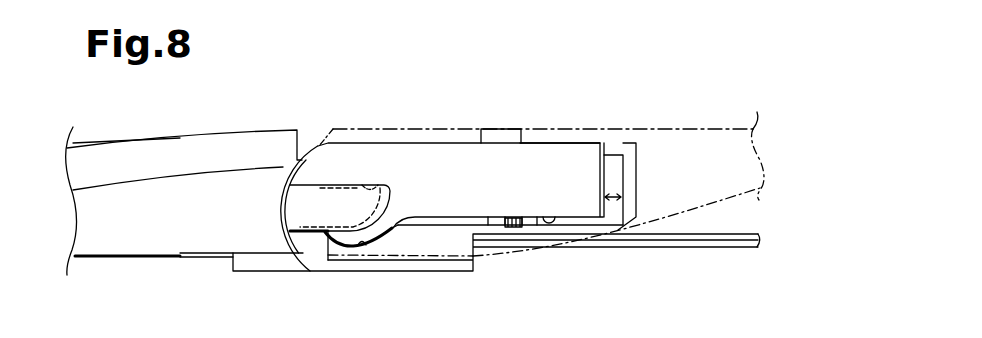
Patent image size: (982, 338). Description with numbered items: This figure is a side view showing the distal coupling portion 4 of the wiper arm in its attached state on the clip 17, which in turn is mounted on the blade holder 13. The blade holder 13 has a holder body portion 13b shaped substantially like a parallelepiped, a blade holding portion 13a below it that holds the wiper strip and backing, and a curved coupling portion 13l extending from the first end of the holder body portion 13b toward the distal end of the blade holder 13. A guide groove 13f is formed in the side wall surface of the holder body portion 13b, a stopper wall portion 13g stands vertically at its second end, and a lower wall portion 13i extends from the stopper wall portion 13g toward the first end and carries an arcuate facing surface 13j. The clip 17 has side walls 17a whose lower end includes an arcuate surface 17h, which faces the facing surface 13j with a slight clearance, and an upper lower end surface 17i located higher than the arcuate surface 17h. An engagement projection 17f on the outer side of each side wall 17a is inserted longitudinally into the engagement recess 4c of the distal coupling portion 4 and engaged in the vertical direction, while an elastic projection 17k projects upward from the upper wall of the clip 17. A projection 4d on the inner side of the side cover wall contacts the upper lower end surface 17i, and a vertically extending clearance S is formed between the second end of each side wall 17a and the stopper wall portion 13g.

The distal coupling portion 4 is at (568, 128).
The engagement recess 4c is at (378, 188).
The projection 4d is at (515, 216).
The blade holder 13 is at (250, 130).
The blade holding portion 13a is at (448, 271).
The holder body portion 13b is at (612, 150).
The guide groove 13f is at (492, 220).
The stopper wall portion 13g is at (638, 168).
The lower wall portion 13i is at (548, 226).
The facing surface 13j is at (365, 248).
The curved coupling portion 13l is at (118, 147).
The clip 17 is at (588, 143).
The side wall 17a is at (455, 150).
The engagement projection 17f is at (344, 185).
The arcuate surface 17h is at (347, 249).
The upper lower end surface 17i is at (550, 219).
The elastic projection 17k is at (507, 128).
The clearance S is at (604, 197).